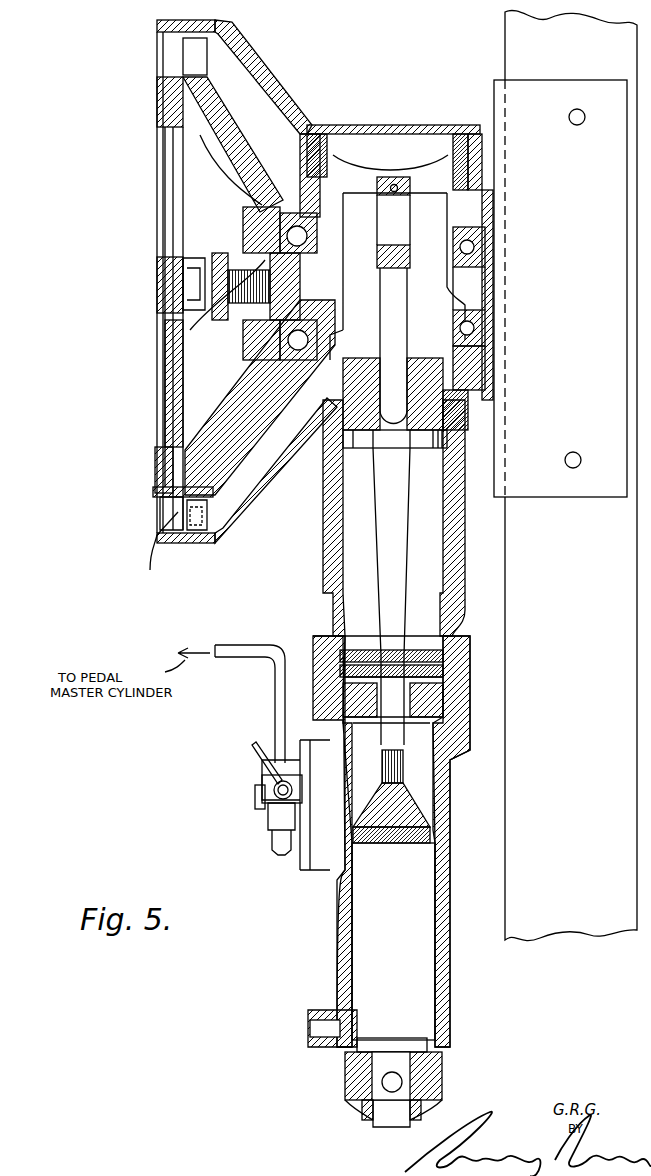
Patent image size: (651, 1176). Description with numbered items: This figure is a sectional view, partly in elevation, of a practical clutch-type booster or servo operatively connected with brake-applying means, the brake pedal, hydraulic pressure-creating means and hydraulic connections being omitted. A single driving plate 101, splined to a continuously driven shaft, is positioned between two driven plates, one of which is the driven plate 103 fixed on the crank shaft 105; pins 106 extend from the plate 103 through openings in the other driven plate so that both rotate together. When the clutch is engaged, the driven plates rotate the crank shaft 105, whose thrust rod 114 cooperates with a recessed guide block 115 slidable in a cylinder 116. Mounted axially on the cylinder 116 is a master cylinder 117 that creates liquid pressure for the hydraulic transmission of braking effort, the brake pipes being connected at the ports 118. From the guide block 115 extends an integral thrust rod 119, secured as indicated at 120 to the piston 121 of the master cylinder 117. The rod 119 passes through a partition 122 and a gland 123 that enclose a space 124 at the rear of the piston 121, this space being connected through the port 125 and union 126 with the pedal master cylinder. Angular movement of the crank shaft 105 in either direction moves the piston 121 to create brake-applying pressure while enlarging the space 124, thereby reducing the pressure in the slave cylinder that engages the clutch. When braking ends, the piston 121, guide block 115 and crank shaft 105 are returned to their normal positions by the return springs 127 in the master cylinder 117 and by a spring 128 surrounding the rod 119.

The driving plate 101 is at (173, 415).
The driven plate 103 is at (217, 512).
The crank shaft 105 is at (350, 257).
The pins 106 is at (151, 551).
The thrust rod 114 is at (397, 308).
The guide block 115 is at (438, 377).
The cylinder 116 is at (467, 552).
The master cylinder 117 is at (348, 893).
The ports 118 is at (345, 1092).
The thrust rod 119 is at (393, 600).
The securing means 120 is at (410, 767).
The piston 121 is at (400, 813).
The partition 122 is at (343, 687).
The gland 123 is at (340, 710).
The space 124 is at (340, 735).
The port 125 is at (290, 765).
The union 126 is at (257, 800).
The return springs 127 is at (398, 952).
The spring 128 is at (418, 542).